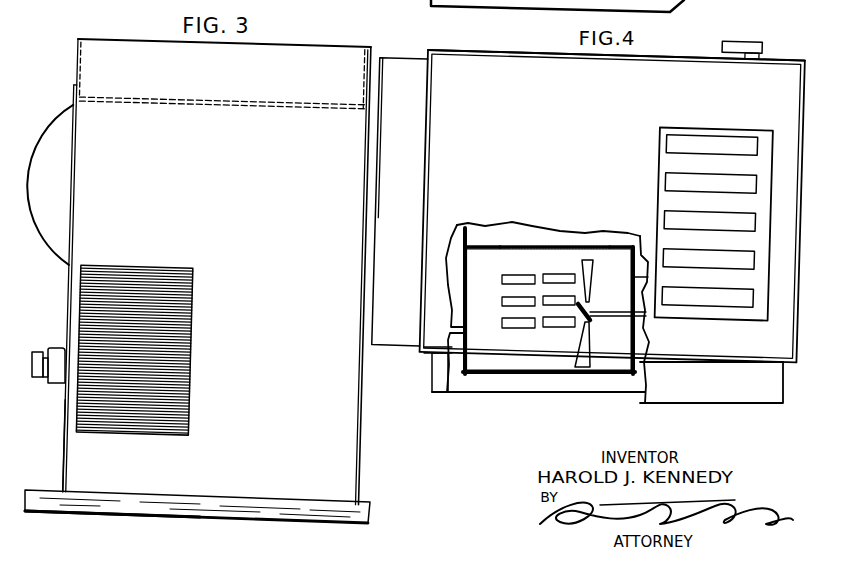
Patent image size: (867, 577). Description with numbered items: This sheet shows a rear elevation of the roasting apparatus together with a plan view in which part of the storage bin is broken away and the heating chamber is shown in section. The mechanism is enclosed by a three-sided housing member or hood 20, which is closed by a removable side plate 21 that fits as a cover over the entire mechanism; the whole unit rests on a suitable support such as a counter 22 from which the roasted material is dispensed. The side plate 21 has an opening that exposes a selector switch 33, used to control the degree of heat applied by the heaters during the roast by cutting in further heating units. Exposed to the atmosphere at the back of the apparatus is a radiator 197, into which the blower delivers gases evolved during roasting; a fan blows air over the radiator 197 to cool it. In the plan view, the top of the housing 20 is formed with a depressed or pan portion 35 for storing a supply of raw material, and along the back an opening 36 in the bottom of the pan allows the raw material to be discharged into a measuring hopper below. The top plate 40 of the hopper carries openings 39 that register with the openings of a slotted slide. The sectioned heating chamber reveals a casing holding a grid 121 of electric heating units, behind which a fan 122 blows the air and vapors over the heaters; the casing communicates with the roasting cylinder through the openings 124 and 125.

In FIG. 3, the housing member or hood 20 is at (218, 480).
In FIG. 3, the side plate 21 is at (63, 450).
In FIG. 3, the counter 22 is at (80, 508).
In FIG. 3, the selector switch 33 is at (55, 350).
In FIG. 3, the depressed or pan portion 35 is at (80, 60).
In FIG. 4, the depressed or pan portion 35 is at (488, 67).
In FIG. 4, the opening 36 is at (718, 131).
In FIG. 4, the openings 39 is at (740, 145).
In FIG. 4, the top plate 40 is at (661, 160).
In FIG. 4, the grid 121 is at (533, 325).
In FIG. 4, the fan 122 is at (583, 346).
In FIG. 4, the opening 124 is at (484, 245).
In FIG. 4, the opening 125 is at (613, 244).
In FIG. 3, the radiator 197 is at (182, 343).